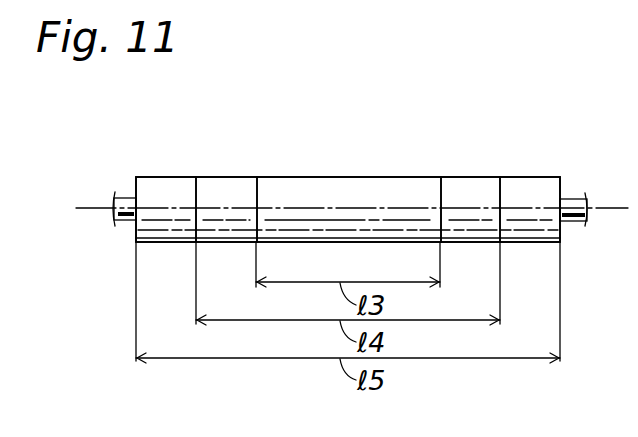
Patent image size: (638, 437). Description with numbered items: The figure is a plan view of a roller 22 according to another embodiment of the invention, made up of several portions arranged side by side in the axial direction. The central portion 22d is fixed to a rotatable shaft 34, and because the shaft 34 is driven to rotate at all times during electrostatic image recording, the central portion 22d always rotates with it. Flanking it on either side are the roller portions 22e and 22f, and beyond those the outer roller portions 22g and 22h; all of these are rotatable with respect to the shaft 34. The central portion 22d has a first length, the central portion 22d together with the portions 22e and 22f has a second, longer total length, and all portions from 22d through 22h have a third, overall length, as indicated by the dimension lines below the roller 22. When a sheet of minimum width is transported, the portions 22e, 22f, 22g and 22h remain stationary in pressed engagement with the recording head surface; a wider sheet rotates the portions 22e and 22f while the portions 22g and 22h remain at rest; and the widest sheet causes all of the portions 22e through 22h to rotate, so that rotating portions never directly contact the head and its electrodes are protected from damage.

The roller 22 is at (311, 149).
The roller portion 22g is at (170, 189).
The roller portion 22e is at (228, 190).
The central portion 22d is at (365, 192).
The roller portion 22f is at (468, 192).
The roller portion 22h is at (532, 190).
The rotatable shaft 34 is at (130, 189).